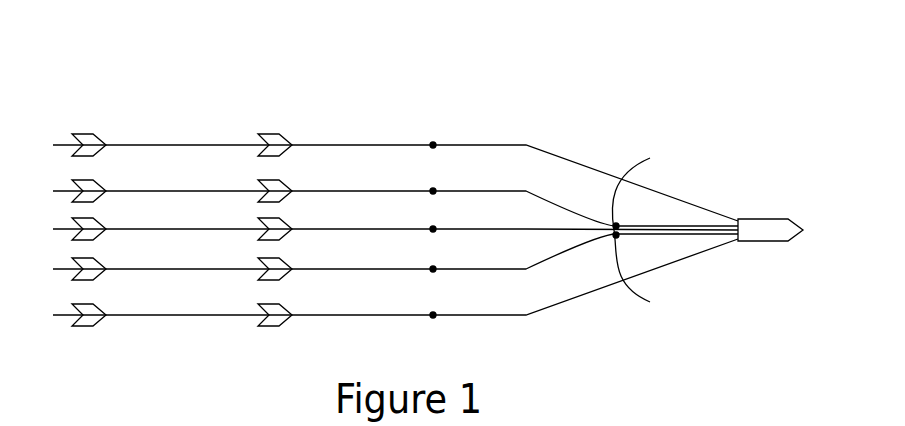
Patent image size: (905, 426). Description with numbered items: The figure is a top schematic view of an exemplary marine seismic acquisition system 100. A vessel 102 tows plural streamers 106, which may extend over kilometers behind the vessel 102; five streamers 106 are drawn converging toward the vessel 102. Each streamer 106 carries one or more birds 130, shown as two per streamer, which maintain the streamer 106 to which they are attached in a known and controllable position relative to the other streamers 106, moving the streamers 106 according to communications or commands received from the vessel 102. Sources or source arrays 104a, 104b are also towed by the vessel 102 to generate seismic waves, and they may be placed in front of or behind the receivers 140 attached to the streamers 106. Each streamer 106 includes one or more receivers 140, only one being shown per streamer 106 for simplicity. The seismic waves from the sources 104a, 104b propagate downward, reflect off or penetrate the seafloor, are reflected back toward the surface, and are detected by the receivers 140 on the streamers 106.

The seismic acquisition system 100 is at (378, 64).
The vessel 102 is at (768, 219).
The source 104a is at (657, 186).
The source 104b is at (658, 276).
The streamer 106 is at (345, 147).
The bird 130 is at (97, 134).
The receiver 140 is at (433, 143).